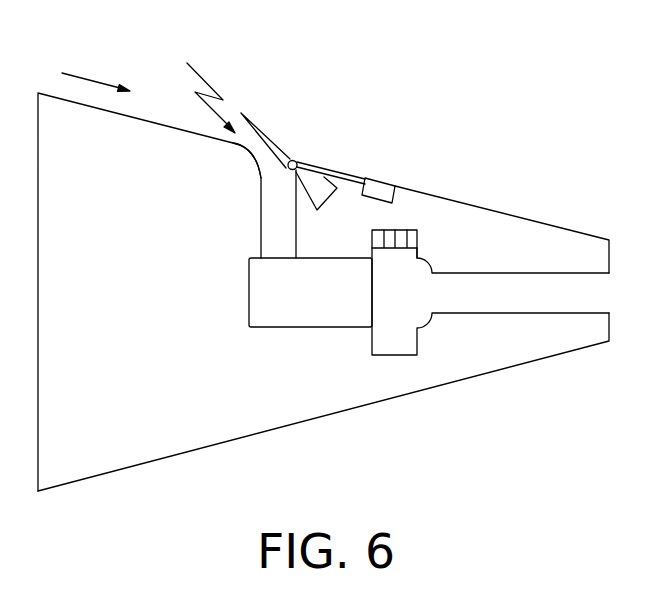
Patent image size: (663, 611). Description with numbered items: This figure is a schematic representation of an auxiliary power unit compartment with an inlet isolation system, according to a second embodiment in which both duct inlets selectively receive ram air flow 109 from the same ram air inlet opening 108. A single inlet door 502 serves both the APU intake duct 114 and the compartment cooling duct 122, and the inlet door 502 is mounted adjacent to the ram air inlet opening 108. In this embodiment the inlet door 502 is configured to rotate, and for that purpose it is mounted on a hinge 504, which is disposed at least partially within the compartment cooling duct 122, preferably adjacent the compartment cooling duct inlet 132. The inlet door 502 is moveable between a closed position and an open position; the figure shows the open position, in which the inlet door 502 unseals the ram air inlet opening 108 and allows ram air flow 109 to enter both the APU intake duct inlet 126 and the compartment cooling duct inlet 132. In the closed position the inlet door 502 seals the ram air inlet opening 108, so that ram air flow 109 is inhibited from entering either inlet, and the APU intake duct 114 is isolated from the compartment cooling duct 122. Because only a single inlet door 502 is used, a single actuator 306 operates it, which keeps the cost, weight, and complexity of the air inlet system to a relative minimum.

The ram air flow 109 is at (73, 73).
The ram air inlet opening 108 is at (184, 84).
The APU intake duct 114 is at (262, 240).
The APU intake duct inlet 126 is at (250, 151).
The compartment cooling duct inlet 132 is at (288, 178).
The inlet door 502 is at (265, 112).
The hinge 504 is at (299, 158).
The compartment cooling duct 122 is at (318, 187).
The actuator 306 is at (387, 187).